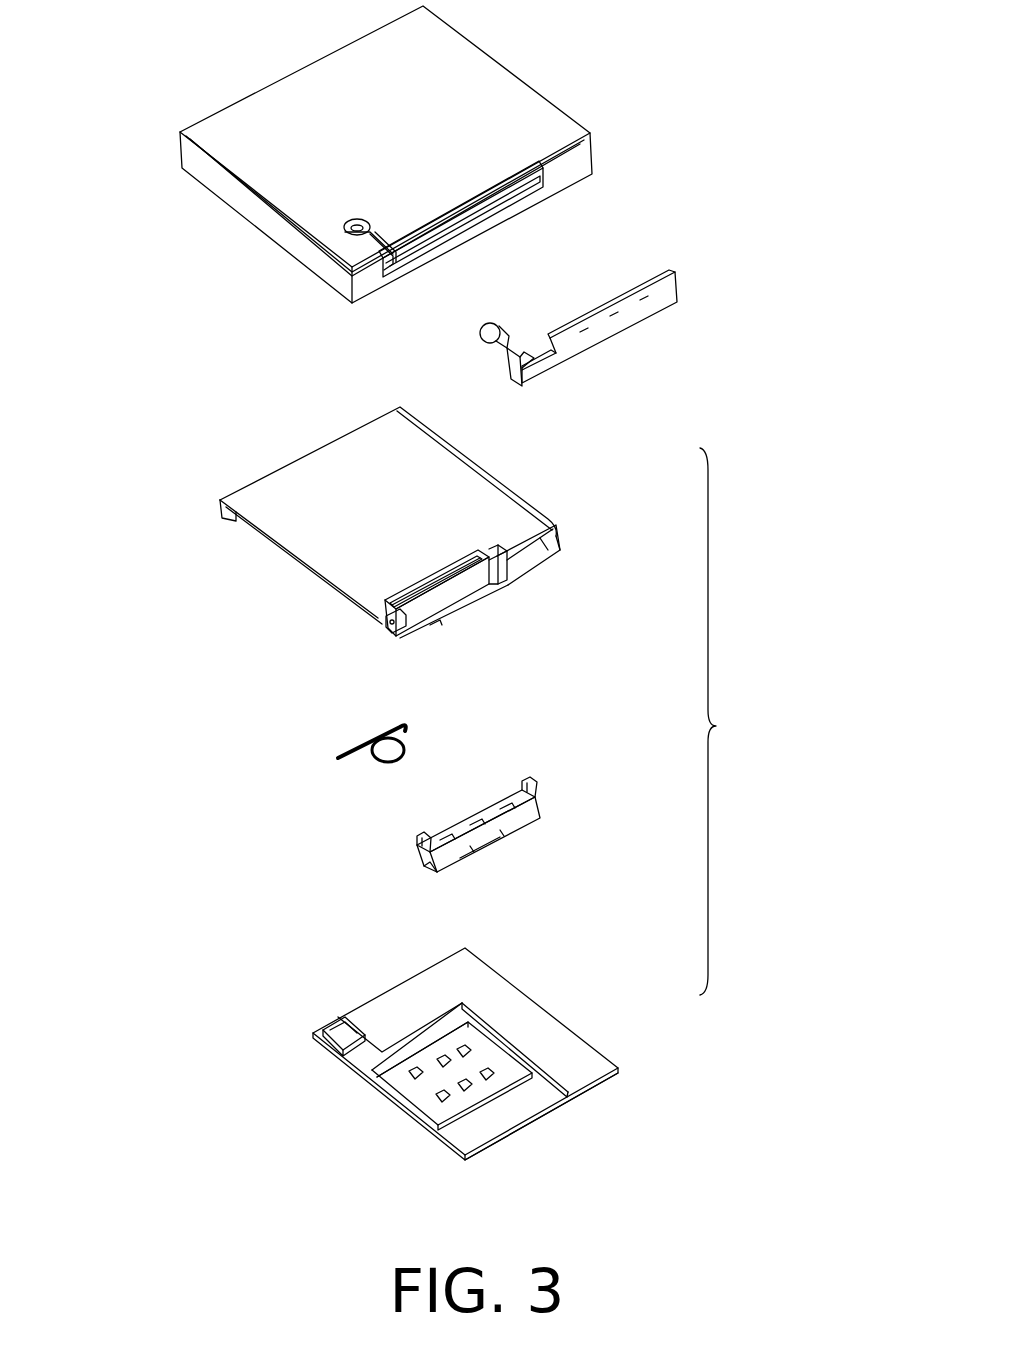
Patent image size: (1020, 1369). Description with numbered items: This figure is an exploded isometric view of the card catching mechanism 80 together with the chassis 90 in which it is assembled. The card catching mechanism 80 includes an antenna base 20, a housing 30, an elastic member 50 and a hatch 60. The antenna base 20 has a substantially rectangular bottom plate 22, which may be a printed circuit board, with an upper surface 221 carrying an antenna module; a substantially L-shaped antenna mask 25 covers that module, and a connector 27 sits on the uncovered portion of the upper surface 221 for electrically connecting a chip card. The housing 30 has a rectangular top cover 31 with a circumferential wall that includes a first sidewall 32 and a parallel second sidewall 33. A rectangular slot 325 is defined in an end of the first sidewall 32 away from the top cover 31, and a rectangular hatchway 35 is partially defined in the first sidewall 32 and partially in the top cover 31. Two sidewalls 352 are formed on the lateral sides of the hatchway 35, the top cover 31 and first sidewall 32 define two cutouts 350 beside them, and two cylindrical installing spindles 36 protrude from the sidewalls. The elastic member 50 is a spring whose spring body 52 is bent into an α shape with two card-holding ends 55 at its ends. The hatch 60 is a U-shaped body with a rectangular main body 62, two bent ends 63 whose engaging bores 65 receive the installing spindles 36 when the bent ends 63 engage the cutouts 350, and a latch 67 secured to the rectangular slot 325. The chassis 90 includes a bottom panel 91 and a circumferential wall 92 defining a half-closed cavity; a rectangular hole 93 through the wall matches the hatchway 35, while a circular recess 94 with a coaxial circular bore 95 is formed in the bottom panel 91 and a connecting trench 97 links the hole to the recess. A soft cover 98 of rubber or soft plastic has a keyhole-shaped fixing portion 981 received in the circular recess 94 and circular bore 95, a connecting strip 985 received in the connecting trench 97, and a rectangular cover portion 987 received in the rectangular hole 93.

The chassis 90 is at (459, 175).
The bottom panel 91 is at (490, 90).
The circumferential wall 92 is at (570, 168).
The rectangular hole 93 is at (478, 213).
The circular recess 94 is at (345, 222).
The circular bore 95 is at (345, 232).
The connecting trench 97 is at (384, 265).
The soft cover 98 is at (598, 323).
The fixing portion 981 is at (480, 333).
The connecting strip 985 is at (522, 372).
The cover portion 987 is at (640, 318).
The housing 30 is at (381, 537).
The top cover 31 is at (378, 435).
The first sidewall 32 is at (543, 557).
The second sidewall 33 is at (213, 521).
The hatchway 35 is at (417, 600).
The cutouts 350 is at (537, 534).
The sidewalls 352 is at (410, 630).
The rectangular slot 325 is at (453, 607).
The installing spindles 36 is at (387, 620).
The elastic member 50 is at (469, 738).
The spring body 52 is at (420, 738).
The card-holding ends 55 is at (342, 748).
The hatch 60 is at (505, 828).
The main body 62 is at (520, 815).
The bent ends 63 is at (522, 785).
The engaging bores 65 is at (420, 860).
The latch 67 is at (492, 882).
The antenna base 20 is at (501, 1066).
The bottom plate 22 is at (496, 1140).
The upper surface 221 is at (540, 1098).
The antenna mask 25 is at (507, 995).
The connector 27 is at (412, 1076).
The card catching mechanism 80 is at (735, 721).